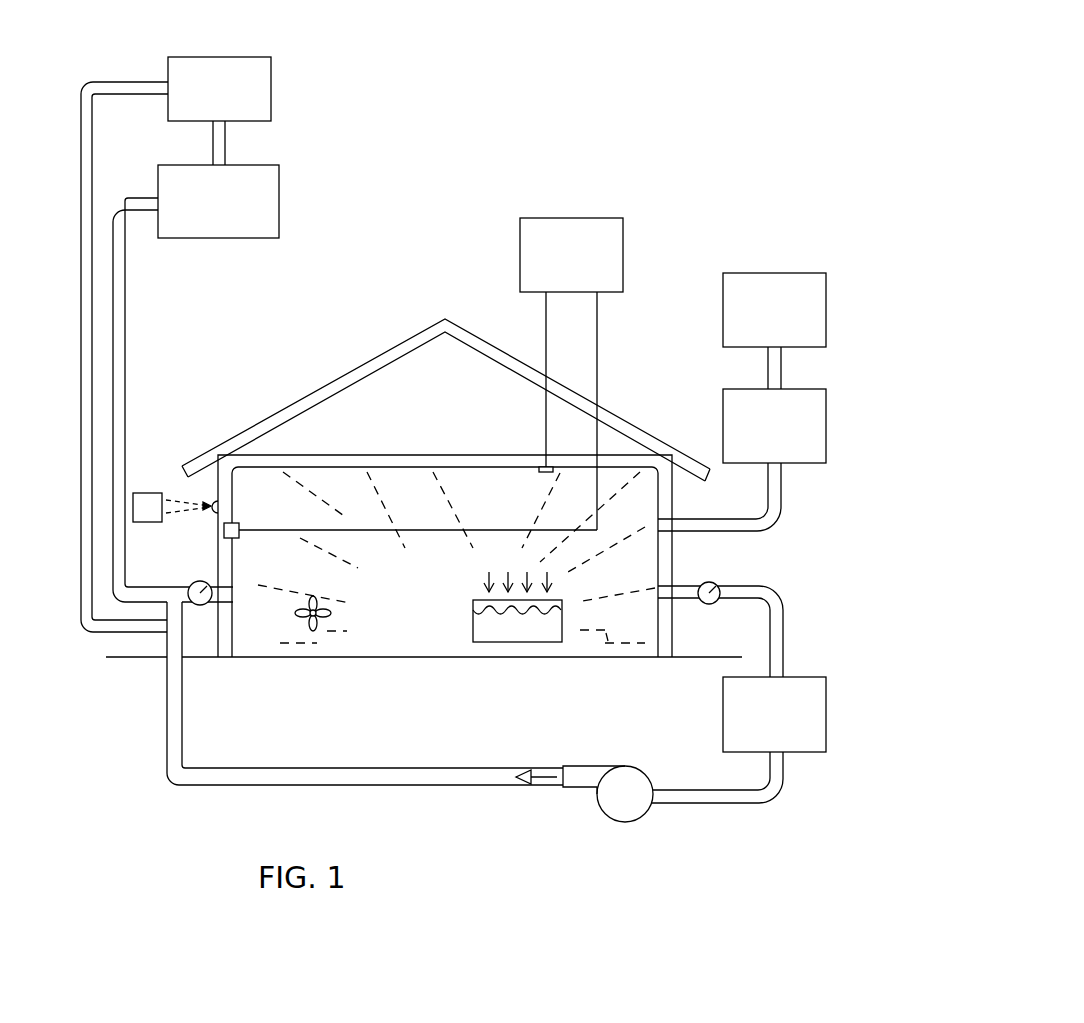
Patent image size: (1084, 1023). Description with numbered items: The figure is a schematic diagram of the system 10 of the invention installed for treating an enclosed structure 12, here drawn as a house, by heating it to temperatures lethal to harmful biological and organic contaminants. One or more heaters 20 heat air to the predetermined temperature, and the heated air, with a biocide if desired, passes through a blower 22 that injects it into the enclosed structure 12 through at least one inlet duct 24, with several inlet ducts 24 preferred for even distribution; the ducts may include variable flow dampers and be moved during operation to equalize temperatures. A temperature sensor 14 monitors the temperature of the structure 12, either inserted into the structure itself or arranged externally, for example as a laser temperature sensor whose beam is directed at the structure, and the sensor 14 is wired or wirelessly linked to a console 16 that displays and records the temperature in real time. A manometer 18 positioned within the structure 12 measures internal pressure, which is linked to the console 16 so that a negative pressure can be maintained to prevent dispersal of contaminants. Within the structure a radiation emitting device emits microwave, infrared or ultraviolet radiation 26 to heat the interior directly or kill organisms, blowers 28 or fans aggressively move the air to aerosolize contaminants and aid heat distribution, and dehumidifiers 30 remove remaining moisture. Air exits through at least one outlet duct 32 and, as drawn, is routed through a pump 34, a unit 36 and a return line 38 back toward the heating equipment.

The system 10 is at (748, 80).
The enclosed structure 12 is at (377, 340).
The temperature sensor 14 is at (745, 565).
The console 16 is at (553, 218).
The manometer 18 is at (538, 472).
The heater 20 is at (271, 82).
The blower 22 is at (279, 193).
The inlet duct 24 is at (127, 367).
The radiation 26 is at (410, 530).
The blower 28 is at (313, 613).
The dehumidifier 30 is at (510, 628).
The outlet duct 32 is at (783, 630).
The circulation pump 34 is at (625, 810).
The heat exchanger 36 is at (826, 712).
The return line 38 is at (92, 427).